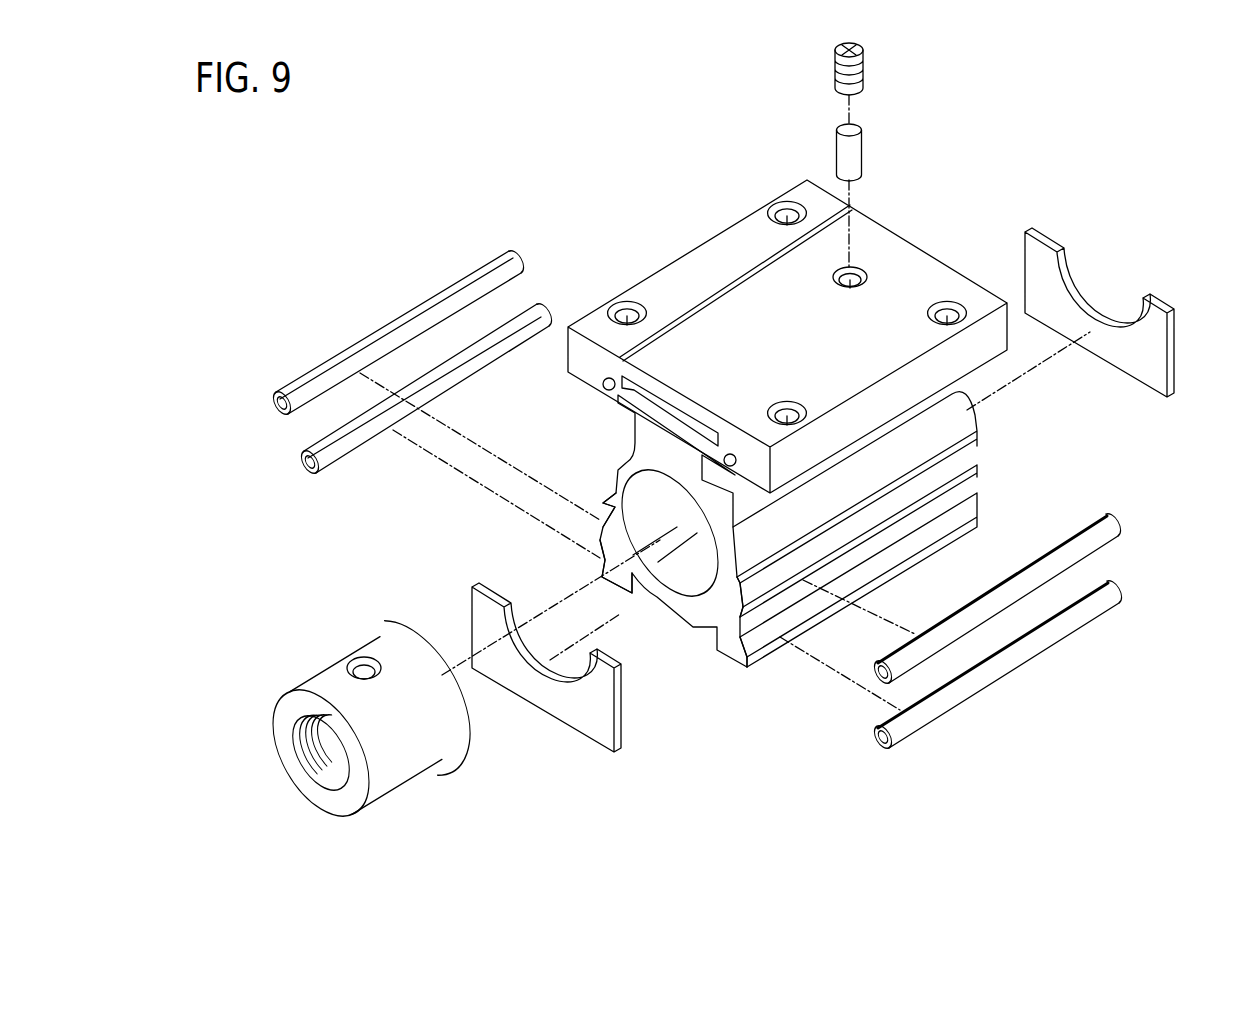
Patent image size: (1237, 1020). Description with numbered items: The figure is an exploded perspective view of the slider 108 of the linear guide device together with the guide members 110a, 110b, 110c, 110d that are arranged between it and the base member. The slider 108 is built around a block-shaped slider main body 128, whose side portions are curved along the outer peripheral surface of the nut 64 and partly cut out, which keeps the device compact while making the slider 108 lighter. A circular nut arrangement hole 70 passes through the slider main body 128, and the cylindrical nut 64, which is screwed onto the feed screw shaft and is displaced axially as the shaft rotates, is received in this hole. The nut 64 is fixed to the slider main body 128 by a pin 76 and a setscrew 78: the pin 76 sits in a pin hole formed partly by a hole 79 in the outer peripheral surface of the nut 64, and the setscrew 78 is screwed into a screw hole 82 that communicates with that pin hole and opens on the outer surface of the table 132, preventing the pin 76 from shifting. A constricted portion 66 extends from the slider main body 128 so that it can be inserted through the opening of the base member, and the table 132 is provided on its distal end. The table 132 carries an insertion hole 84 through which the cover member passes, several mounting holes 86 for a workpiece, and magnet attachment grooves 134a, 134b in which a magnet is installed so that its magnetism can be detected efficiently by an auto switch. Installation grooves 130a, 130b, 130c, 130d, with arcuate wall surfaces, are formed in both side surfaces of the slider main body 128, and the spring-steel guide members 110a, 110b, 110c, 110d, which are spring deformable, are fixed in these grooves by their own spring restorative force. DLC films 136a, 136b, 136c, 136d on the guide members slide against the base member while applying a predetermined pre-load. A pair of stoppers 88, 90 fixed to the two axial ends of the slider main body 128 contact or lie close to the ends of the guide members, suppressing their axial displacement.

The nut 64 is at (371, 725).
The constricted portion 66 is at (672, 437).
The nut arrangement hole 70 is at (683, 580).
The pin 76 is at (834, 147).
The setscrew 78 is at (832, 65).
The hole 79 is at (360, 665).
The screw hole 82 is at (832, 275).
The insertion hole 84 is at (637, 390).
The mounting holes 86 is at (950, 310).
The stopper 88 is at (1125, 362).
The stopper 90 is at (560, 707).
The slider 108 is at (1072, 224).
The guide member 110a is at (873, 740).
The guide member 110b is at (309, 466).
The guide member 110c is at (870, 675).
The guide member 110d is at (281, 408).
The slider main body 128 is at (945, 427).
The installation groove 130a is at (753, 645).
The installation groove 130b is at (600, 575).
The installation groove 130c is at (803, 577).
The installation groove 130d is at (595, 508).
The table 132 is at (717, 245).
The magnet attachment groove 134a is at (733, 454).
The magnet attachment groove 134b is at (602, 380).
The DLC film 136a is at (1014, 676).
The DLC film 136b is at (394, 401).
The DLC film 136c is at (969, 604).
The DLC film 136d is at (365, 345).